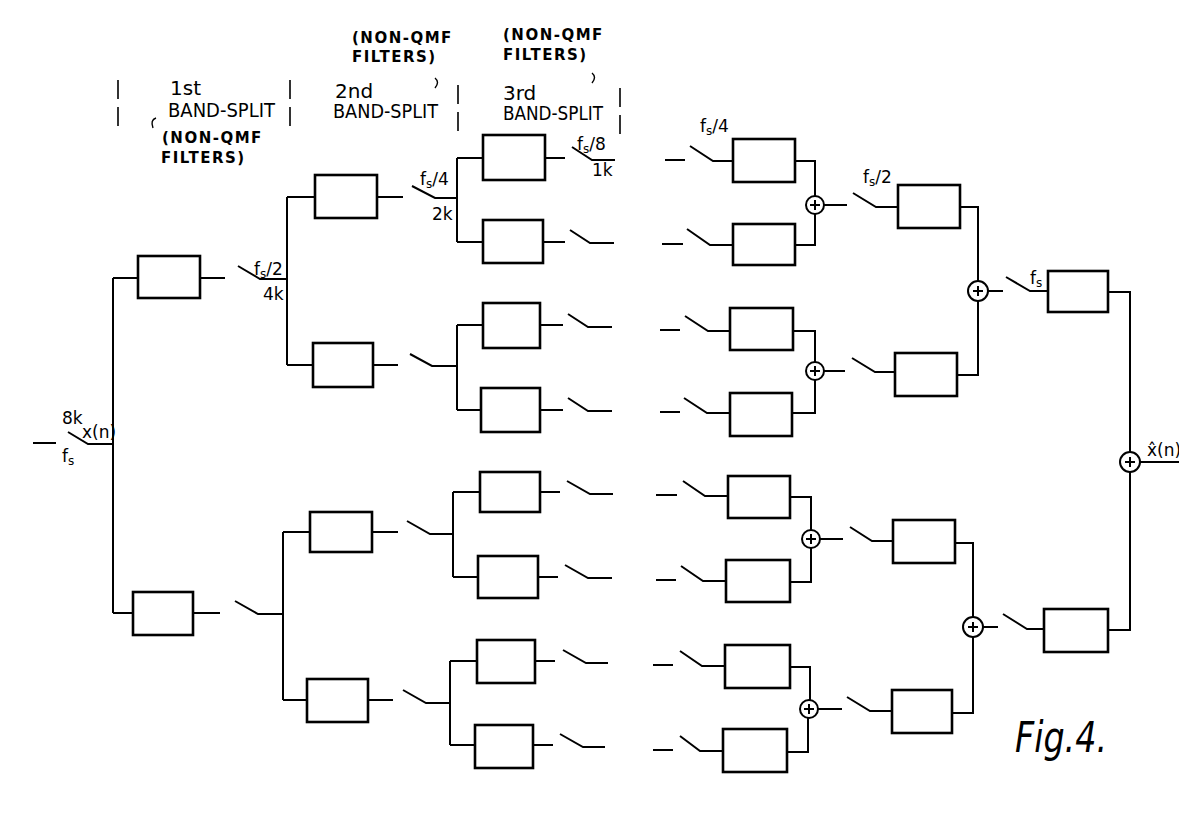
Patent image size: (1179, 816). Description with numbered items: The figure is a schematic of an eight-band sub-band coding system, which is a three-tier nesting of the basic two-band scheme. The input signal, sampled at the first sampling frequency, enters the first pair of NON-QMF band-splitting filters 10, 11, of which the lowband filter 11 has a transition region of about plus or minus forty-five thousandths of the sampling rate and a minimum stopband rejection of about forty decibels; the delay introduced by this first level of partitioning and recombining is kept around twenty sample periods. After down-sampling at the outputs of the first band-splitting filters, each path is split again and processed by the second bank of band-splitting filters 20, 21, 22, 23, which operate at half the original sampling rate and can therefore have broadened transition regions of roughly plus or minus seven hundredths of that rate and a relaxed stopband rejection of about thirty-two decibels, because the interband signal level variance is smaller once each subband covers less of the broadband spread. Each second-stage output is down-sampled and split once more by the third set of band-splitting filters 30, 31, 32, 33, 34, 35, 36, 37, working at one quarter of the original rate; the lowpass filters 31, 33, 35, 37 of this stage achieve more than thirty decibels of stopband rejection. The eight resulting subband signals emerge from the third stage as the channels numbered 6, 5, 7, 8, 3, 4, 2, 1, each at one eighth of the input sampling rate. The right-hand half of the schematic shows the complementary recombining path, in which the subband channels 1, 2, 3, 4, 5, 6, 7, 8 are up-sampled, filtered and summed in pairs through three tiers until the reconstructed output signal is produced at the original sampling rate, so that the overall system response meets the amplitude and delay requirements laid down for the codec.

The first band-splitting filter 10 is at (170, 256).
The lowband filter 11 is at (169, 592).
The second band-splitting filter 20 is at (369, 150).
The second band-splitting filter 21 is at (355, 343).
The second band-splitting filter 22 is at (355, 512).
The second band-splitting filter 23 is at (345, 679).
The third band-splitting filter 30 is at (545, 172).
The lowpass filter 31 is at (543, 258).
The third band-splitting filter 32 is at (540, 312).
The lowpass filter 33 is at (540, 396).
The third band-splitting filter 34 is at (540, 479).
The lowpass filter 35 is at (538, 563).
The third band-splitting filter 36 is at (535, 646).
The lowpass filter 37 is at (533, 732).
The sub-band channel output 1 is at (576, 746).
The sub-band channel output 2 is at (578, 662).
The sub-band channel output 3 is at (583, 493).
The sub-band channel output 4 is at (581, 577).
The sub-band channel output 5 is at (585, 242).
The sub-band channel output 6 is at (586, 159).
The sub-band channel output 7 is at (583, 326).
The sub-band channel output 8 is at (583, 410).